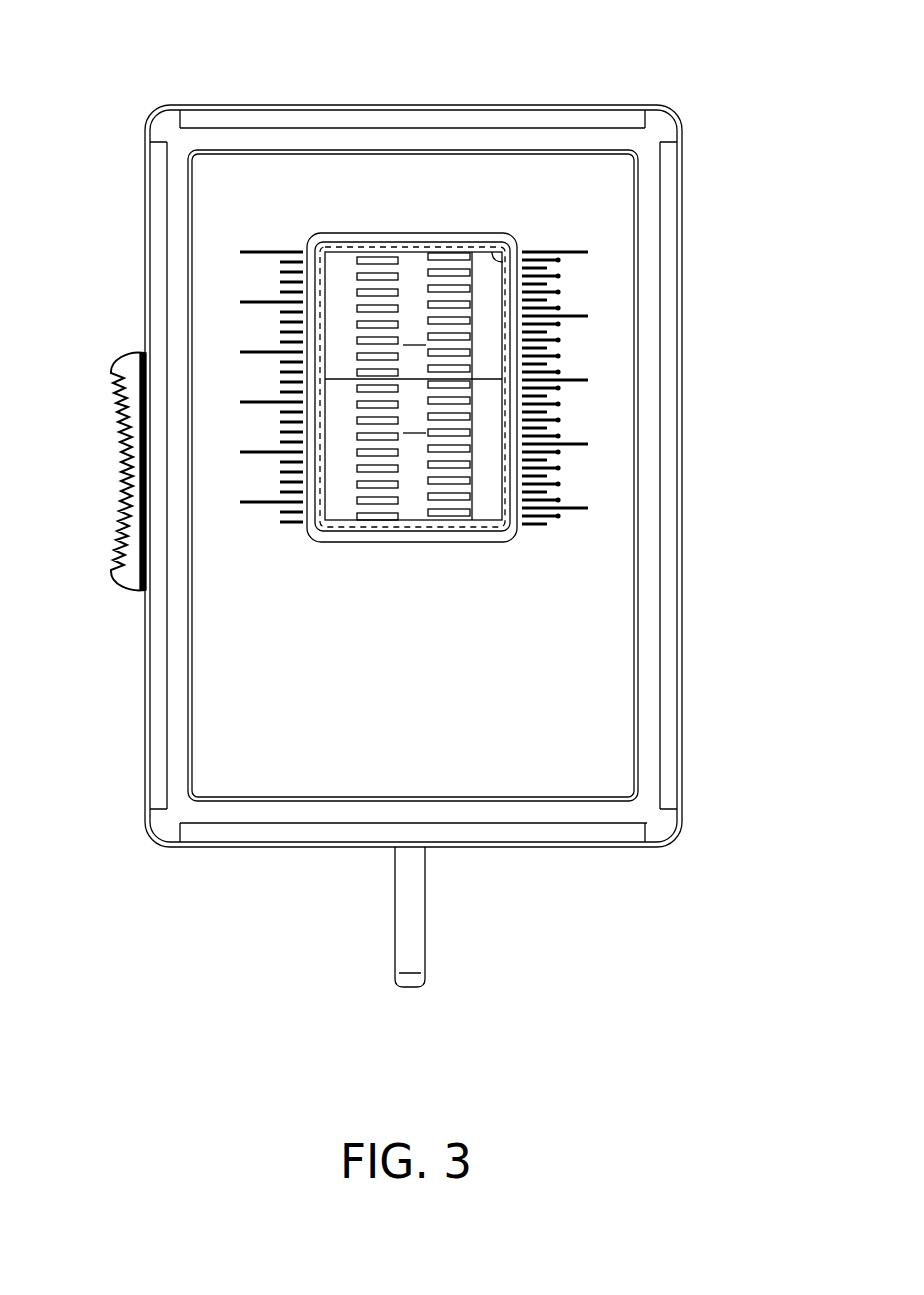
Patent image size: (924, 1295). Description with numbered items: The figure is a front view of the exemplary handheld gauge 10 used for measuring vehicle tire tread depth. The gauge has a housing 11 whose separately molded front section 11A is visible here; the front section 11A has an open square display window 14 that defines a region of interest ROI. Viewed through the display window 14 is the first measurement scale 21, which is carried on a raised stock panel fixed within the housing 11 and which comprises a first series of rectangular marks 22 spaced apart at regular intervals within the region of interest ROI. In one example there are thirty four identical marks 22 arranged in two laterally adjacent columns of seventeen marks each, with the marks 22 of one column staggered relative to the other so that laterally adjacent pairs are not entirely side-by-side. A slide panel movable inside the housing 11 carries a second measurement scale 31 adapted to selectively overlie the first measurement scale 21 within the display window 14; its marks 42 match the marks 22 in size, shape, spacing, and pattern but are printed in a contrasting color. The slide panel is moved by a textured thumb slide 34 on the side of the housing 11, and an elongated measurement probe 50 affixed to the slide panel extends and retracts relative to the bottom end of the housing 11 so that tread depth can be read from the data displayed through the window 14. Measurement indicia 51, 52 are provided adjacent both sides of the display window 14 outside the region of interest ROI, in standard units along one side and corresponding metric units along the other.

The handheld gauge 10 is at (717, 171).
The housing 11 is at (228, 105).
The front section 11A is at (600, 628).
The display window 14 is at (397, 243).
The region of interest ROI is at (495, 255).
The first measurement scale 21 is at (413, 268).
The rectangular marks 22 is at (358, 328).
The second measurement scale 31 is at (482, 505).
The marks 42 is at (428, 493).
The measurement probe 50 is at (417, 903).
The measurement indicia 51 is at (548, 250).
The measurement indicia 52 is at (277, 250).
The textured thumb slide 34 is at (125, 466).